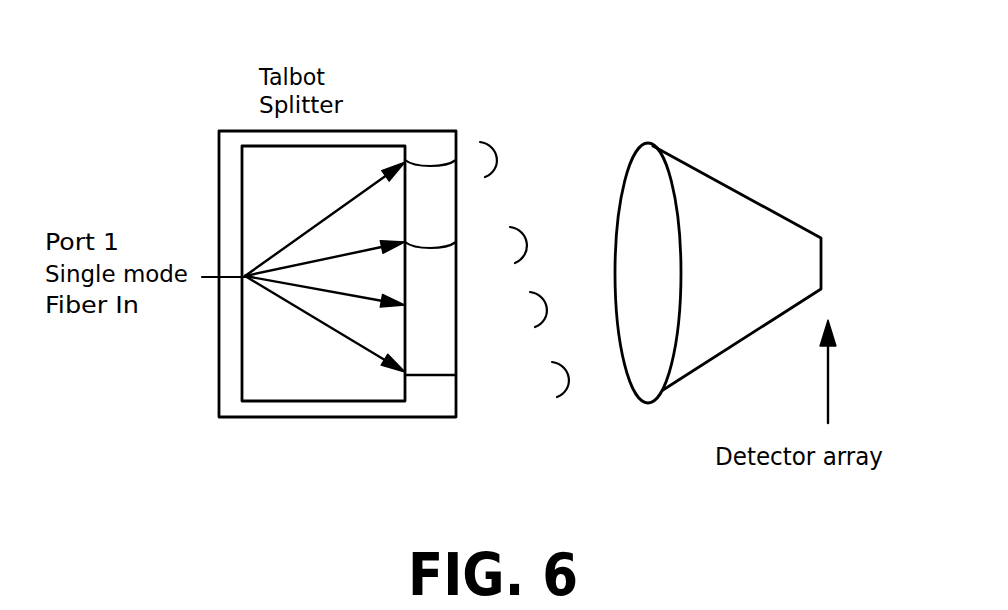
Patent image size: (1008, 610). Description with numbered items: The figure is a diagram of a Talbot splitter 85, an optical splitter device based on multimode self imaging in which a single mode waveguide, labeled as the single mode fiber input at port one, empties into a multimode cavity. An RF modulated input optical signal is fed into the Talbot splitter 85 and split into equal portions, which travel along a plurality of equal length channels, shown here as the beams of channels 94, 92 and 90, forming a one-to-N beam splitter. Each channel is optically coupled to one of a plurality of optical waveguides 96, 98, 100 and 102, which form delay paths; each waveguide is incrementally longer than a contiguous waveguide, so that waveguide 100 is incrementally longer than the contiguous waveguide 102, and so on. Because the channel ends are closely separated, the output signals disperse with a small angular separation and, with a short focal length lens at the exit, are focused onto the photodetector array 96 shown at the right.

The Talbot splitter 85 is at (166, 172).
The channel 94 is at (338, 208).
The channel 92 is at (352, 252).
The channel 90 is at (373, 300).
The optical waveguide 96 is at (437, 165).
The optical waveguide 98 is at (434, 242).
The optical waveguide 100 is at (405, 311).
The optical waveguide 102 is at (437, 376).